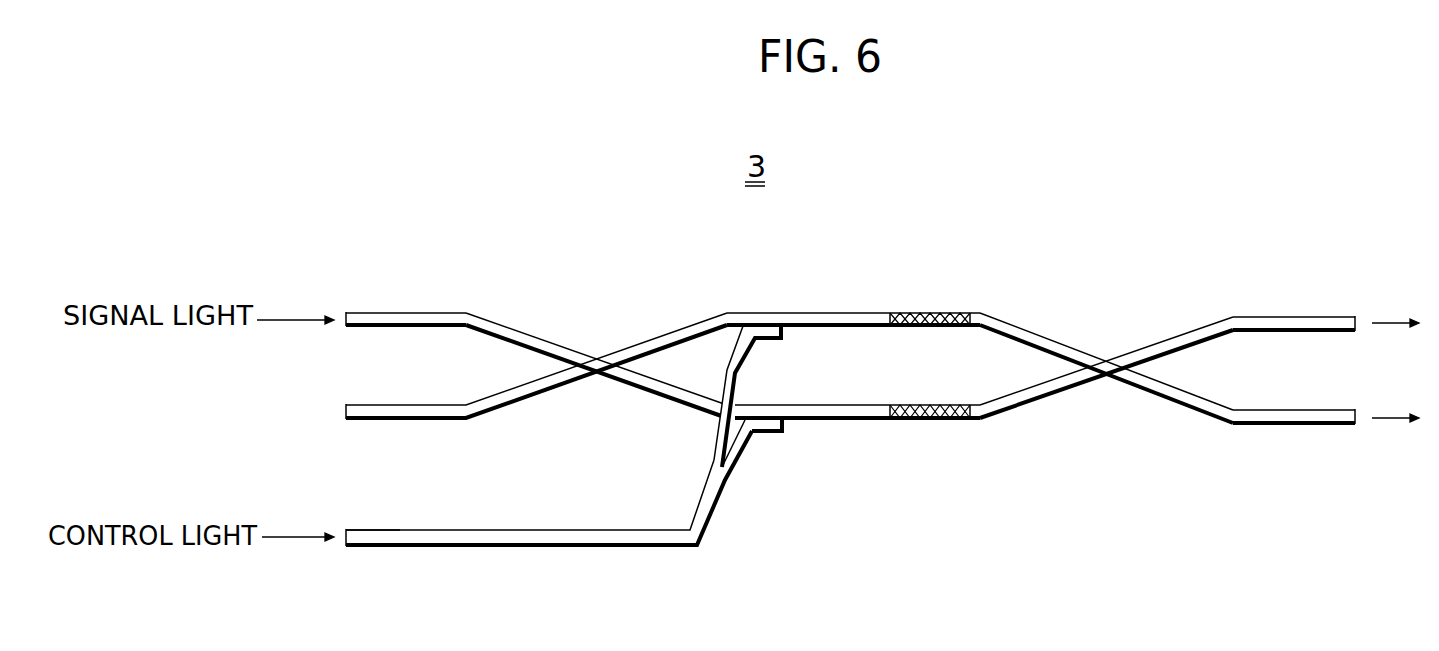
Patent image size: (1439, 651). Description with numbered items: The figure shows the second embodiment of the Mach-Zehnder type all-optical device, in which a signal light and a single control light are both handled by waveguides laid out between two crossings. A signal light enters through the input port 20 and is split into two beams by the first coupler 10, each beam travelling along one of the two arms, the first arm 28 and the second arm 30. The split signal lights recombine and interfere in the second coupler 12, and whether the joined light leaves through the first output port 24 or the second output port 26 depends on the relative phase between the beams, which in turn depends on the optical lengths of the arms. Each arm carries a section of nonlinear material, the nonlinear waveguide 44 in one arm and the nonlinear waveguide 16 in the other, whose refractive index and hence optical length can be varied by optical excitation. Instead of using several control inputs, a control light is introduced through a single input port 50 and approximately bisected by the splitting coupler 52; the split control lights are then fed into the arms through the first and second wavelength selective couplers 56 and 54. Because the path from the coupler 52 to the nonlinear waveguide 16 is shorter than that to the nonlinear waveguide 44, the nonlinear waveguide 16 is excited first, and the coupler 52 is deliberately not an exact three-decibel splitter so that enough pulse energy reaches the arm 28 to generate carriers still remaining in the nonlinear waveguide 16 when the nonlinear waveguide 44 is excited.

The first 3dB coupler 10 is at (596, 350).
The second 3dB coupler 12 is at (1105, 355).
The nonlinear waveguide 16 is at (940, 420).
The input port 20 is at (341, 312).
The first output port 24 is at (1357, 332).
The second output port 26 is at (1357, 425).
The first arm 28 is at (820, 312).
The second arm 30 is at (868, 420).
The nonlinear waveguide 44 is at (942, 313).
The input port 50 is at (350, 547).
The 3 dB coupler 52 is at (733, 484).
The second wavelength selective coupler 54 is at (766, 340).
The first wavelength selective coupler 56 is at (776, 433).